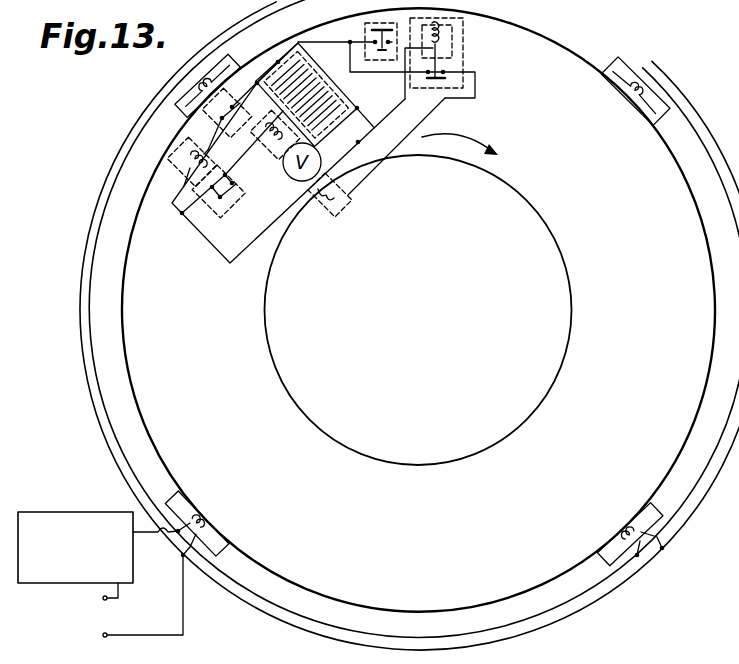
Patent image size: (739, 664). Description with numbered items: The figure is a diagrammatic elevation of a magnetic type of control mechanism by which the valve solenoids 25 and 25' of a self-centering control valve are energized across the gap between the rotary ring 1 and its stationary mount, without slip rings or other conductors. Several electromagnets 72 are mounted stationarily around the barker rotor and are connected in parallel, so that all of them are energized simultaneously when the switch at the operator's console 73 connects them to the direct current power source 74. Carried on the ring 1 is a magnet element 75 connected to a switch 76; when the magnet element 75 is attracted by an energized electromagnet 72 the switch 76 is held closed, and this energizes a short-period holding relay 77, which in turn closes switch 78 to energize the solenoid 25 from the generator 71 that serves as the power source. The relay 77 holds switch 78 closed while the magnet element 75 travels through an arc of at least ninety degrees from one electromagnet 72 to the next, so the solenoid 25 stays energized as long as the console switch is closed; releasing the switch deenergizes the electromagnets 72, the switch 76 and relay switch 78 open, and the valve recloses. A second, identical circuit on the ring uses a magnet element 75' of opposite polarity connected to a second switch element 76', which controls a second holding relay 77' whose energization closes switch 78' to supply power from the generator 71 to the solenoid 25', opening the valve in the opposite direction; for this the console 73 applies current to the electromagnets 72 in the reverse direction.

The rotary ring 1 is at (132, 329).
The valve solenoid 25 is at (302, 153).
The valve solenoid 25' is at (376, 164).
The generator 71 is at (353, 108).
The electromagnet 72 is at (641, 84).
The operator's console 73 is at (78, 511).
The direct current power source 74 is at (108, 598).
The magnet element 75 is at (256, 70).
The magnet element 75' is at (363, 40).
The switch 76 is at (226, 121).
The switch element 76' is at (389, 73).
The holding relay 77 is at (179, 179).
The holding relay 77' is at (460, 53).
The switch 78 is at (231, 173).
The switch 78' is at (454, 102).